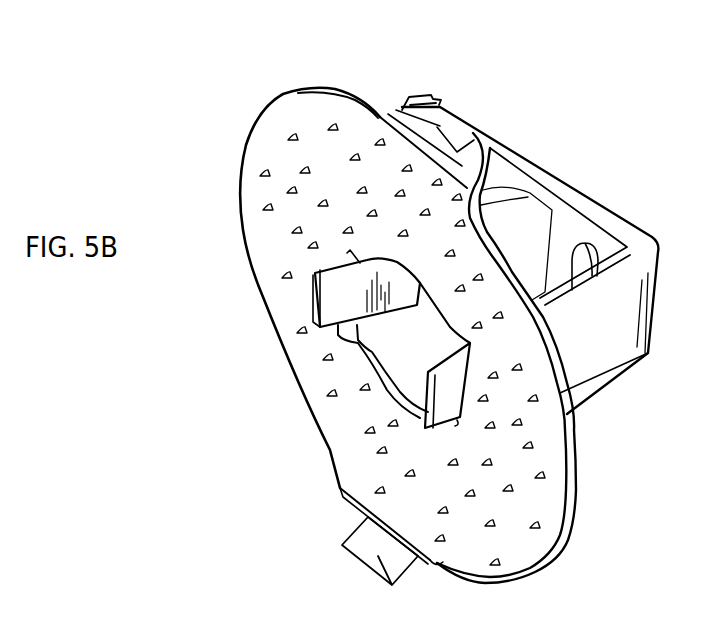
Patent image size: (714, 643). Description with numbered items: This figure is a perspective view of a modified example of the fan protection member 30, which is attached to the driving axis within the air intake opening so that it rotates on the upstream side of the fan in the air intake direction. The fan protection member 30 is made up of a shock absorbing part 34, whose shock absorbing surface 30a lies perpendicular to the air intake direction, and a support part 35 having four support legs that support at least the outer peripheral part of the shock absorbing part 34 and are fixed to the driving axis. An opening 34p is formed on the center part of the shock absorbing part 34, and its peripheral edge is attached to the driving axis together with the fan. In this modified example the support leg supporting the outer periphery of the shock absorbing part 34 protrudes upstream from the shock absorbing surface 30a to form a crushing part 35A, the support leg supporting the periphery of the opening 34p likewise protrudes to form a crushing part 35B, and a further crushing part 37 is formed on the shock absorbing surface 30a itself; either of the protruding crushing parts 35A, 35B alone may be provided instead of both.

The fan protection member 30 is at (244, 69).
The shock absorbing surface 30a is at (250, 257).
The shock absorbing part 34 is at (570, 483).
The opening 34p is at (375, 368).
The support part 35 is at (520, 155).
The crushing part 35A is at (402, 106).
The crushing part 35B is at (313, 300).
The crushing part 37 is at (293, 132).